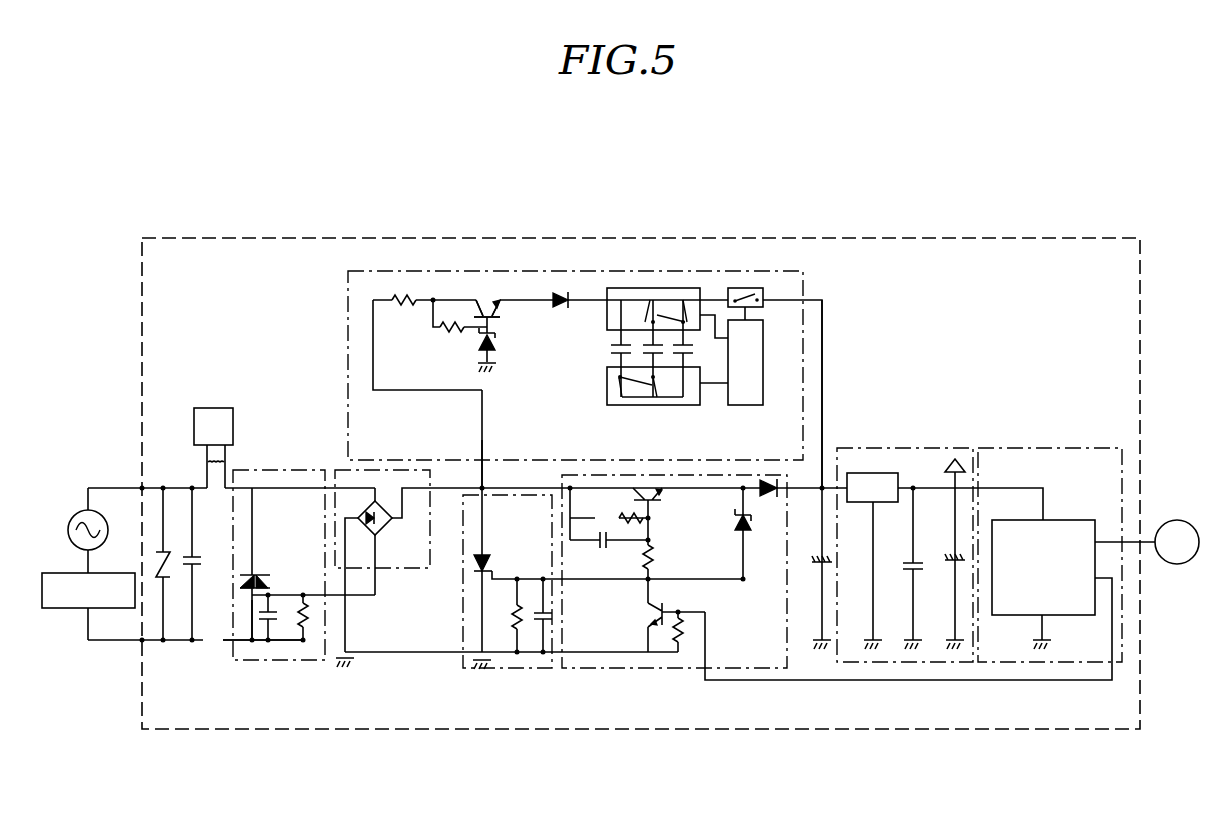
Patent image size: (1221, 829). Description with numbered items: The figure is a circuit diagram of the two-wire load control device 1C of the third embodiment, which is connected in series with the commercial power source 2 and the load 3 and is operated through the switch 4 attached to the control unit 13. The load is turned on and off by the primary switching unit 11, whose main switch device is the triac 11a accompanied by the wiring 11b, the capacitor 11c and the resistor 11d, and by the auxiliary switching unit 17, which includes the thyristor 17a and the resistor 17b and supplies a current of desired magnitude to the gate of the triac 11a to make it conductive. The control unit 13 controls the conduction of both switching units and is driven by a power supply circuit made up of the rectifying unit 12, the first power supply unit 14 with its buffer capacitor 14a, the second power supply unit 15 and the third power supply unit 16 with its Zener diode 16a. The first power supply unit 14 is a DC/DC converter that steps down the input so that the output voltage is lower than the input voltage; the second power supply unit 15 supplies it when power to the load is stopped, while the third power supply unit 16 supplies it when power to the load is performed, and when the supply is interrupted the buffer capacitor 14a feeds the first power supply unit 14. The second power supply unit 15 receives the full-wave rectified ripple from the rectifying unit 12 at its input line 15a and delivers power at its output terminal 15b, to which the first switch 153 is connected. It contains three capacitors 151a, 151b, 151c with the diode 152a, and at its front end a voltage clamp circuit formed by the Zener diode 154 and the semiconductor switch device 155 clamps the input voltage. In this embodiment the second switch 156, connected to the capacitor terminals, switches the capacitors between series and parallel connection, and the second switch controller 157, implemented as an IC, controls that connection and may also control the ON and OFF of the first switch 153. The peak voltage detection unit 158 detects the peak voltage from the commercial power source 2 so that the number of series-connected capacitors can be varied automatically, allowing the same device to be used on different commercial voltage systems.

The two-wire load control device 1C is at (483, 130).
The commercial power source 2 is at (74, 515).
The load 3 is at (55, 573).
The operation switch 4 is at (1177, 564).
The primary switching unit 11 is at (313, 470).
The triac 11a is at (247, 573).
The connection wire 11b is at (257, 630).
The capacitor 11c is at (280, 620).
The resistor 11d is at (306, 632).
The rectifying unit 12 is at (393, 568).
The control unit 13 is at (1080, 520).
The first power supply unit 14 is at (910, 448).
The buffer capacitor 14a is at (824, 568).
The second power supply unit 15 is at (793, 271).
The input line 15a is at (480, 487).
The output terminal 15b is at (822, 486).
The third power supply unit 16 is at (790, 510).
The zener diode 16a is at (747, 532).
The auxiliary switching unit 17 is at (497, 668).
The thyristor 17a is at (477, 571).
The resistor 17b is at (519, 624).
The capacitor 151a is at (610, 346).
The capacitor 151b is at (653, 349).
The capacitor 151c is at (683, 349).
The diode 152a is at (559, 293).
The first switch 153 is at (745, 288).
The Zener diode 154 is at (480, 341).
The semiconductor switch device 155 is at (485, 296).
The second switch 156 is at (661, 288).
The second switch controller 157 is at (748, 405).
The peak voltage detection unit 158 is at (205, 408).